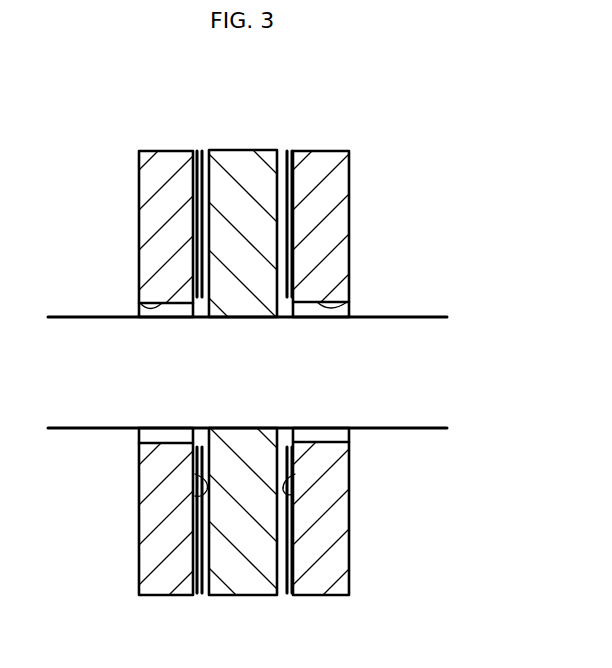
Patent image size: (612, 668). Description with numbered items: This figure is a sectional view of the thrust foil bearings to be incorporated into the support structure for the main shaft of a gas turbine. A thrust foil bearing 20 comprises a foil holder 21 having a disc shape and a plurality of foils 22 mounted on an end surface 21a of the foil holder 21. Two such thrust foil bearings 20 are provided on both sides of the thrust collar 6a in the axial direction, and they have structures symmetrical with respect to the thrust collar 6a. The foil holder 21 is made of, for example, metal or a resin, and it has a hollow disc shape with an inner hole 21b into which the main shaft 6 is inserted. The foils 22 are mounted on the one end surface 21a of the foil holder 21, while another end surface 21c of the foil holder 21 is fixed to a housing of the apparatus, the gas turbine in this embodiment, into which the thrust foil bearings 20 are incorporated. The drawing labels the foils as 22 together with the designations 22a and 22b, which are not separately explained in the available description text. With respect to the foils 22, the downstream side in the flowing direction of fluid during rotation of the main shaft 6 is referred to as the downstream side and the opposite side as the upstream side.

The main shaft 6 is at (412, 338).
The thrust collar 6a is at (243, 573).
The thrust foil bearing 20 is at (163, 146).
The foil holder 21 is at (152, 226).
The end surface 21a is at (195, 474).
The inner hole 21b is at (138, 312).
The another end surface 21c is at (139, 538).
The foil 22 is at (241, 350).
The inner terminal layer 22a is at (286, 199).
The outer terminal layer 22b is at (195, 186).